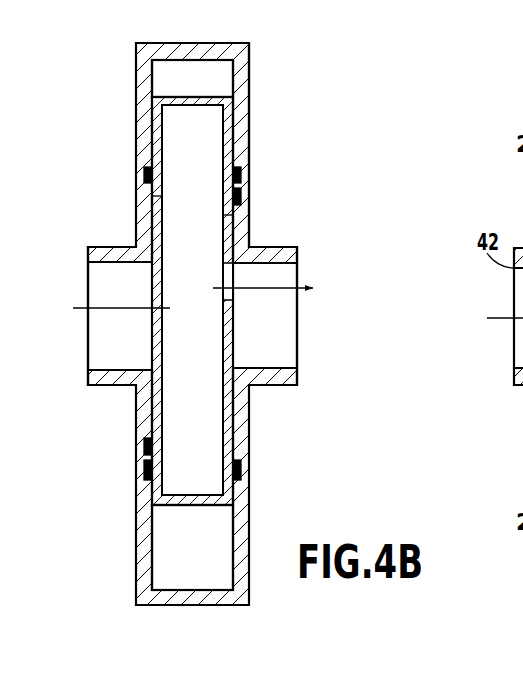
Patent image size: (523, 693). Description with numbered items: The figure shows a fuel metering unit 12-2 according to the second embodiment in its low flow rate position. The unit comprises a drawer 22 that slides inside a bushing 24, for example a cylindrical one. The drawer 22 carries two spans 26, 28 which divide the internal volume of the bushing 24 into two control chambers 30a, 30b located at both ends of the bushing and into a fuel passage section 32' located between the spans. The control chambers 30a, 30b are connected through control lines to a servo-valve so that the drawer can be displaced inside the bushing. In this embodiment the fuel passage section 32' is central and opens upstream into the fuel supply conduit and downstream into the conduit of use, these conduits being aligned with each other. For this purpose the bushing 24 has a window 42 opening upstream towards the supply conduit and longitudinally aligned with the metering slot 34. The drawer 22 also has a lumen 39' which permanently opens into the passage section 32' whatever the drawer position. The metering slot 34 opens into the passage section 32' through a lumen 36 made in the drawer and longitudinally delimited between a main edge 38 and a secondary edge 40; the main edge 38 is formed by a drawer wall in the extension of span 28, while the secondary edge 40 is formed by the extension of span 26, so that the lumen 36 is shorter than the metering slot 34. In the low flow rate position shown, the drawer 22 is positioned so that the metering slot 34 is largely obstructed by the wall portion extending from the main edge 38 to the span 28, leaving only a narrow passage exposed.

The fuel metering unit 12-2 is at (283, 192).
The drawer 22 is at (221, 442).
The bushing 24 is at (253, 117).
The span 26 is at (163, 98).
The span 28 is at (168, 497).
The control chamber 30a is at (209, 92).
The control chamber 30b is at (209, 559).
The fuel passage section 32' is at (192, 300).
The metering slot 34 is at (272, 264).
The lumen 36 is at (217, 308).
The main edge 38 is at (228, 300).
The lumen 39' is at (172, 165).
The secondary edge 40 is at (228, 228).
The window 42 is at (100, 263).